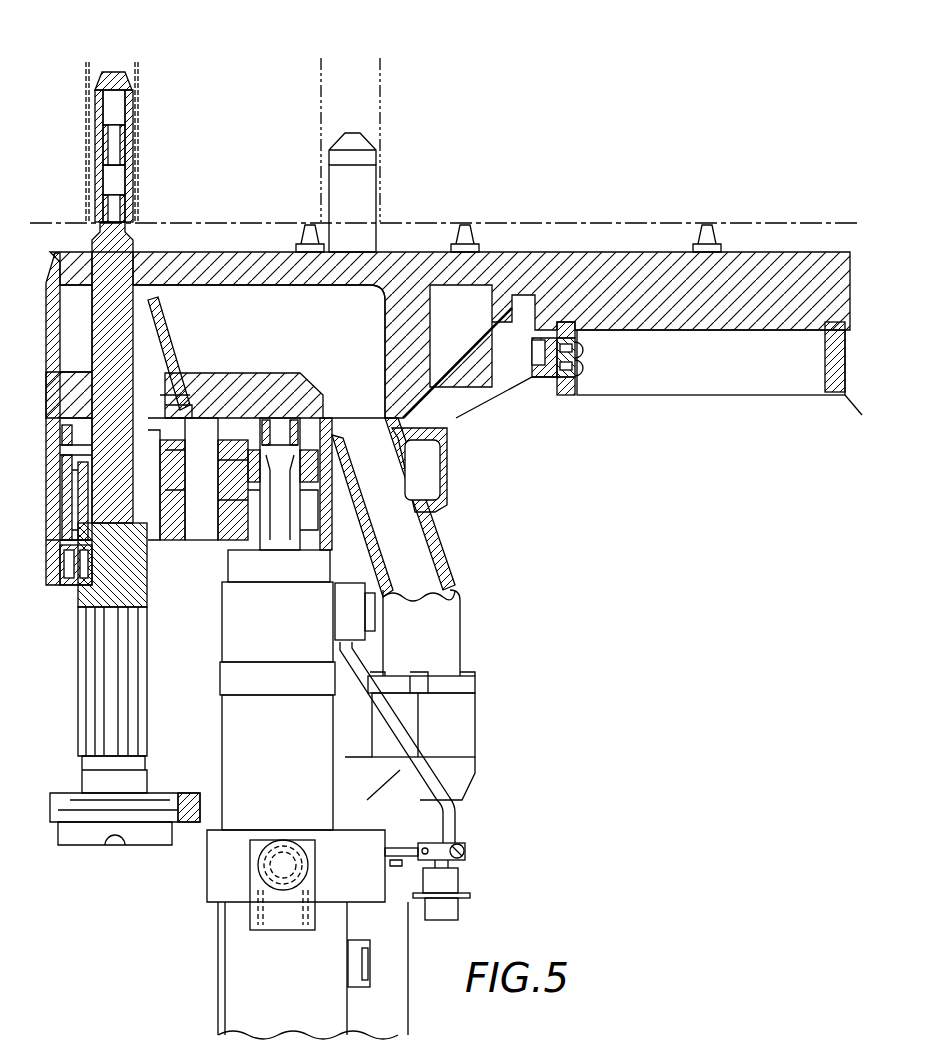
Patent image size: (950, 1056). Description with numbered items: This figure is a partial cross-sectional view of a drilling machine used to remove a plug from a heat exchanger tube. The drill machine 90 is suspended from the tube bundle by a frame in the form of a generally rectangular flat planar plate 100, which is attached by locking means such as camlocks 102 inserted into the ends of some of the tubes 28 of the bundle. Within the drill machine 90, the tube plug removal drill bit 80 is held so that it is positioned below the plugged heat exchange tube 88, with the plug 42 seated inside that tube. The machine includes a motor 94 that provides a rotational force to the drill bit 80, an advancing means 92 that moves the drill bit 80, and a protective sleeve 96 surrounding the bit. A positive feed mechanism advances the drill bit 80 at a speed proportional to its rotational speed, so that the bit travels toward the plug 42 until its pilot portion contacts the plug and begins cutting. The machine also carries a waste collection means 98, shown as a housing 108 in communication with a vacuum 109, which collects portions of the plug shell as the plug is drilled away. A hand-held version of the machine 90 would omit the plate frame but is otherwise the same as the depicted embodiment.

The tubes 28 is at (318, 118).
The plug 42 is at (116, 72).
The tube plug removal drill bit 80 is at (108, 330).
The plugged heat exchange tube 88 is at (86, 148).
The drill machine 90 is at (462, 626).
The advancing means 92 is at (47, 545).
The motor 94 is at (273, 540).
The protective sleeve 96 is at (47, 352).
The waste collection means 98 is at (437, 518).
The planar plate 100 is at (580, 252).
The camlocks 102 is at (378, 158).
The housing 108 is at (312, 292).
The vacuum 109 is at (478, 720).